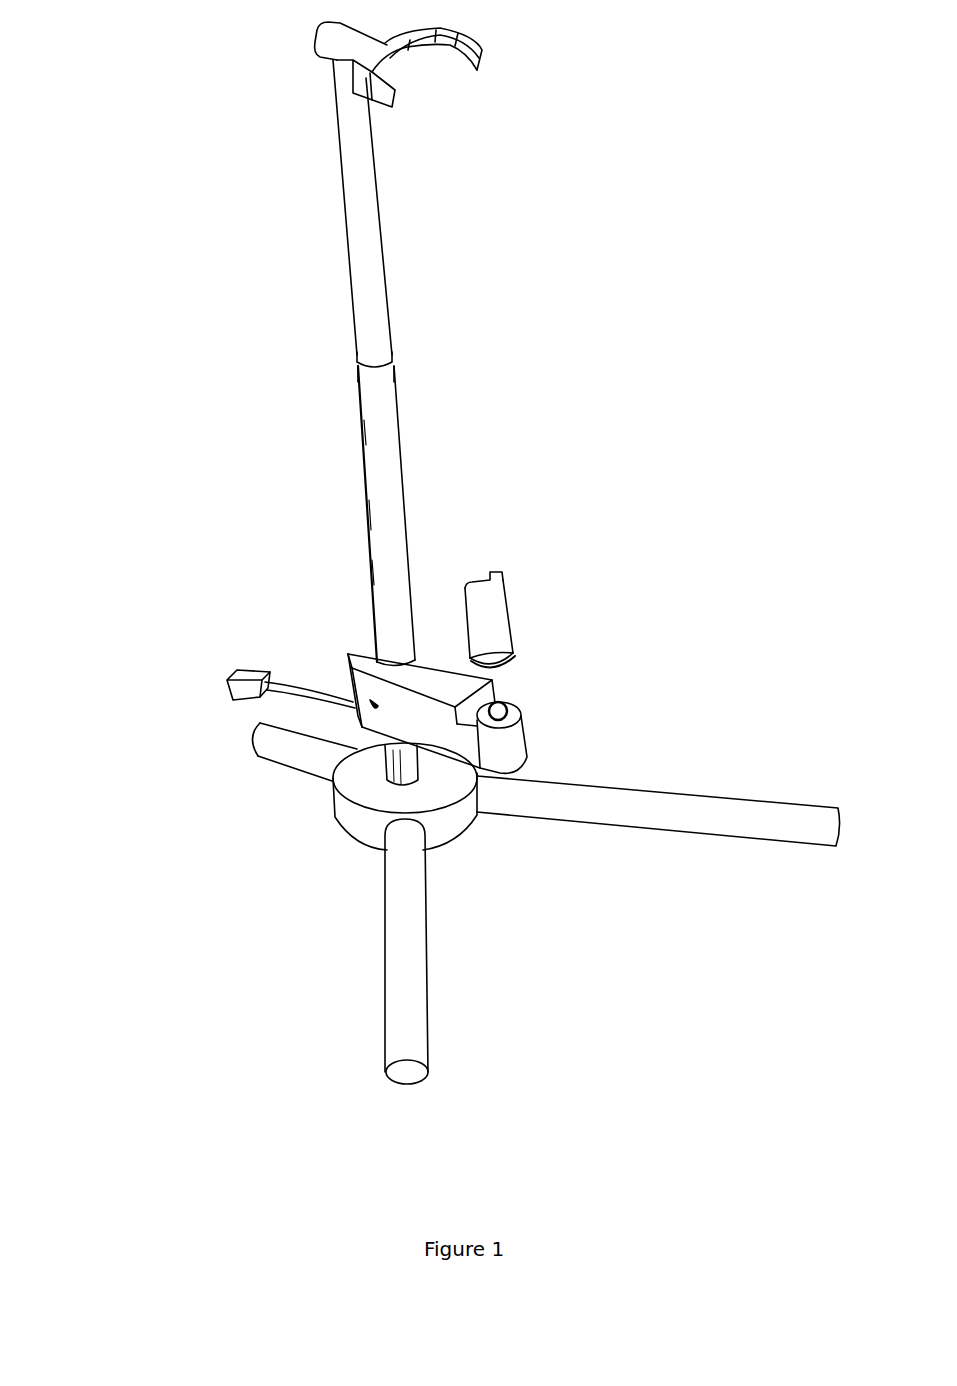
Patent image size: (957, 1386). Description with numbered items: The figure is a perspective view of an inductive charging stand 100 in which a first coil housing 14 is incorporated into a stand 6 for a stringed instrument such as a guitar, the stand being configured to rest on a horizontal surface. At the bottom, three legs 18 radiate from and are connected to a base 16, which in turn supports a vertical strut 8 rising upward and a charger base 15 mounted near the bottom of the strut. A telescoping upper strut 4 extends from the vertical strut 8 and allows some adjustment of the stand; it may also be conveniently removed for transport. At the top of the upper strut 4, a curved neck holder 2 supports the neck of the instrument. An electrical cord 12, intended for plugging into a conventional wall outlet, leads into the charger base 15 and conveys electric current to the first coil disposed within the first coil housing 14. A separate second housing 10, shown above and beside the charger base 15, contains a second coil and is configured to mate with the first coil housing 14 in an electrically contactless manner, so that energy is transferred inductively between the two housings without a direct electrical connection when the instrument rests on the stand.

The inductive charging stand 100 is at (212, 65).
The neck holder 2 is at (472, 65).
The telescoping upper strut 4 is at (358, 232).
The stand 6 is at (337, 380).
The vertical strut 8 is at (378, 518).
The second housing 10 is at (508, 595).
The electrical cord 12 is at (235, 672).
The first coil housing 14 is at (530, 710).
The charger base 15 is at (431, 731).
The base 16 is at (458, 822).
The legs 18 is at (252, 740).